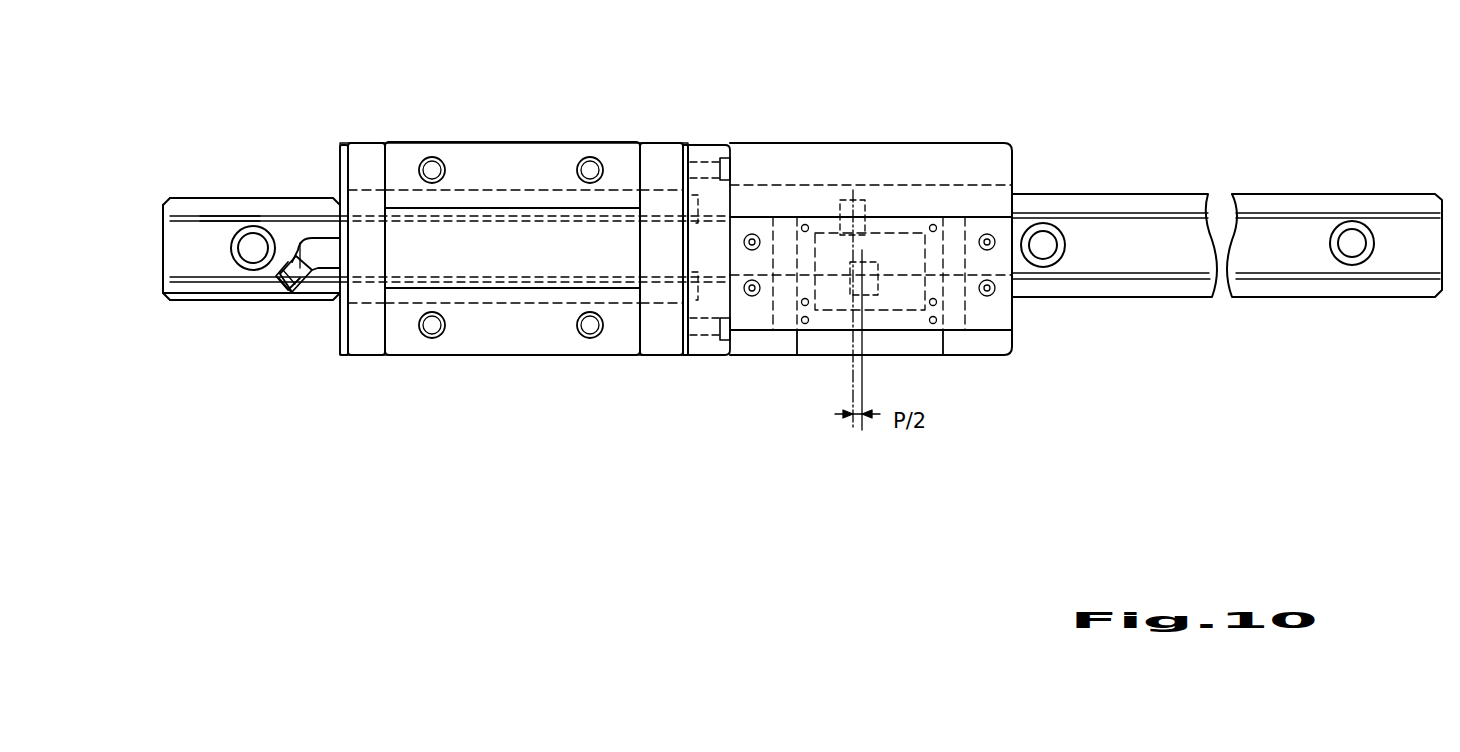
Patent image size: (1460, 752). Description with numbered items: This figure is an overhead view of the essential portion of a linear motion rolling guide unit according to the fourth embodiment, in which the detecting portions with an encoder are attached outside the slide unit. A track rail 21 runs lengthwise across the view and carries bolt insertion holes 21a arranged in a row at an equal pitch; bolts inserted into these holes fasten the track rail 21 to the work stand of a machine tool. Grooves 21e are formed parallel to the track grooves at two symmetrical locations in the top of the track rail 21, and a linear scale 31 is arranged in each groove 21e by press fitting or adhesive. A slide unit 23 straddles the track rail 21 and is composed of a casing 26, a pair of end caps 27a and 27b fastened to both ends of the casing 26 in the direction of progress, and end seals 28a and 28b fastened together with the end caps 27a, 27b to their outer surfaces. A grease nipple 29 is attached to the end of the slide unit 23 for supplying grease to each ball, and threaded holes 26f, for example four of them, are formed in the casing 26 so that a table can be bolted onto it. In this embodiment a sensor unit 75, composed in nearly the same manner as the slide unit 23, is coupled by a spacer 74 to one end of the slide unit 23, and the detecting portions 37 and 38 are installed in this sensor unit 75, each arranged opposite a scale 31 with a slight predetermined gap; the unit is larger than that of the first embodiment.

The track rail 21 is at (1180, 190).
The bolt insertion holes 21a is at (266, 232).
The grooves 21e is at (172, 217).
The slide unit 23 is at (478, 135).
The casing 26 is at (530, 142).
The threaded holes 26f is at (432, 160).
The end cap 27a is at (364, 143).
The end cap 27b is at (650, 145).
The end seal 28a is at (340, 145).
The end seal 28b is at (688, 145).
The grease nipple 29 is at (292, 292).
The linear scale 31 is at (208, 217).
The detecting portion 37 is at (867, 208).
The detecting portion 38 is at (907, 340).
The spacer 74 is at (712, 147).
The sensor unit 75 is at (880, 140).